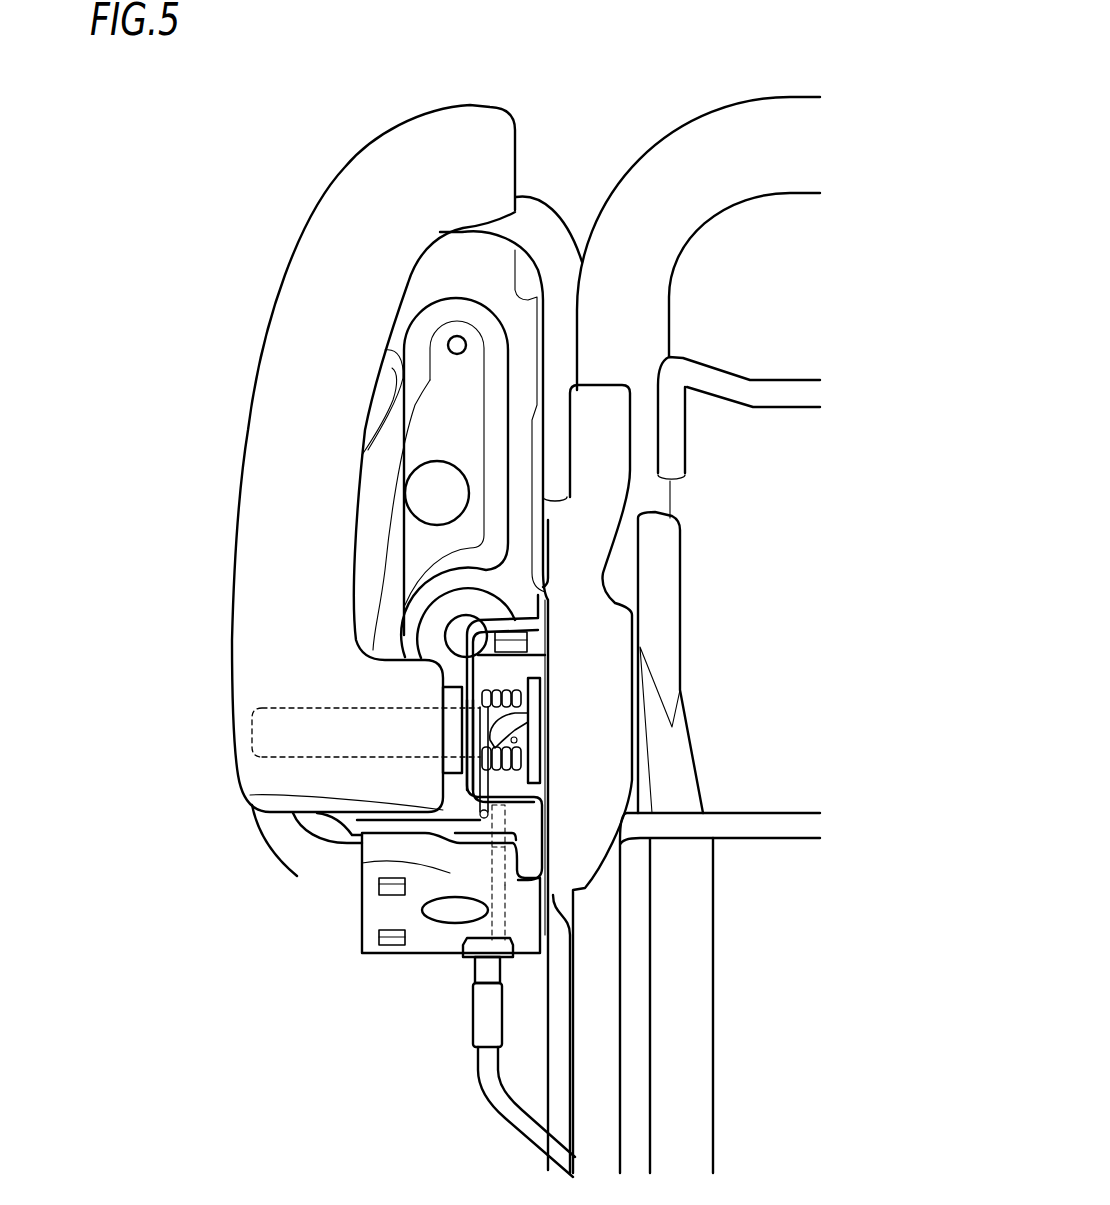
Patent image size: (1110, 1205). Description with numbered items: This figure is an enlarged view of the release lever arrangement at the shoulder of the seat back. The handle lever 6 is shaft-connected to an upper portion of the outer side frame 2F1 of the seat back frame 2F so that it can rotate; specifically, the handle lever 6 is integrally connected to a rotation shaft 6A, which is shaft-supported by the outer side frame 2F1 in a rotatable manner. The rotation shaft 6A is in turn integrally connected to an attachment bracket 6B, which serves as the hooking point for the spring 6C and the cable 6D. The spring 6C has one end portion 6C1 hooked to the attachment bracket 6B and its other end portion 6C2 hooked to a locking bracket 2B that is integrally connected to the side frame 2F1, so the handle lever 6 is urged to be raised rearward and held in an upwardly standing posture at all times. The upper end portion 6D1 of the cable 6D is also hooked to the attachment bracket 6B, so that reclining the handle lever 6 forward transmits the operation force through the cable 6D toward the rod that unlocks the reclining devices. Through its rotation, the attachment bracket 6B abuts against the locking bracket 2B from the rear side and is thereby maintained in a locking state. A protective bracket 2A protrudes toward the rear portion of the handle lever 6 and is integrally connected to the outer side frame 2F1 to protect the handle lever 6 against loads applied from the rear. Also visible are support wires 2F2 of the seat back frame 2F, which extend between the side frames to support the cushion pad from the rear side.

The handle lever 6 is at (360, 170).
The rotation shaft 6A is at (290, 717).
The attachment bracket 6B is at (533, 738).
The spring 6C is at (515, 750).
The one end portion 6C1 is at (525, 718).
The other end portion 6C2 is at (477, 810).
The cable 6D is at (450, 900).
The upper end portion 6D1 is at (508, 818).
The protective bracket 2A is at (538, 222).
The locking bracket 2B is at (473, 835).
The seat back frame 2F is at (716, 135).
The outer side frame 2F1 is at (615, 633).
The support wire 2F2 is at (773, 388).